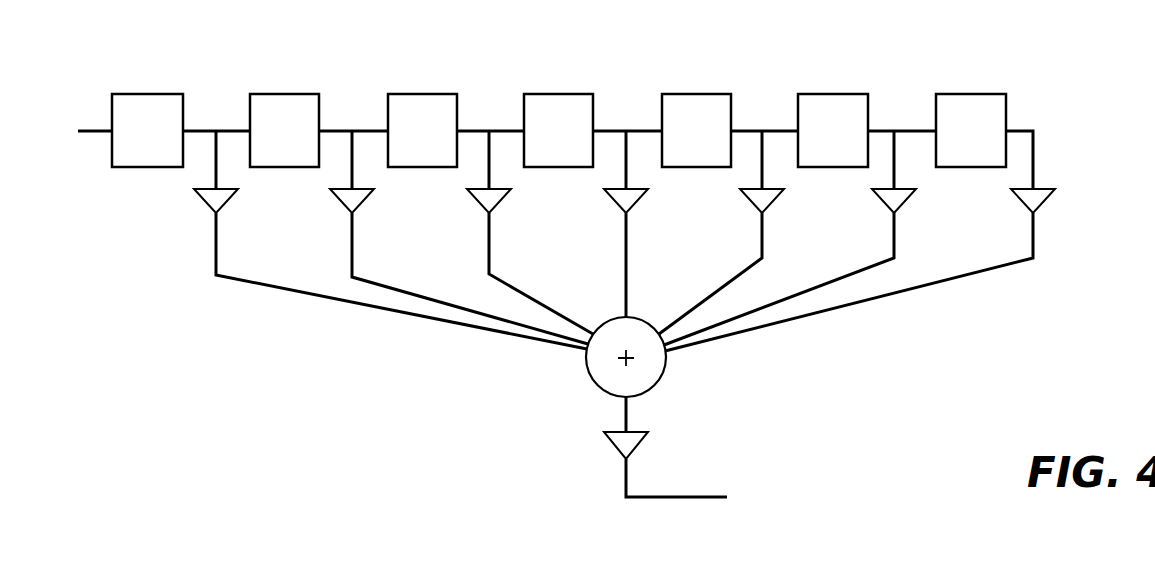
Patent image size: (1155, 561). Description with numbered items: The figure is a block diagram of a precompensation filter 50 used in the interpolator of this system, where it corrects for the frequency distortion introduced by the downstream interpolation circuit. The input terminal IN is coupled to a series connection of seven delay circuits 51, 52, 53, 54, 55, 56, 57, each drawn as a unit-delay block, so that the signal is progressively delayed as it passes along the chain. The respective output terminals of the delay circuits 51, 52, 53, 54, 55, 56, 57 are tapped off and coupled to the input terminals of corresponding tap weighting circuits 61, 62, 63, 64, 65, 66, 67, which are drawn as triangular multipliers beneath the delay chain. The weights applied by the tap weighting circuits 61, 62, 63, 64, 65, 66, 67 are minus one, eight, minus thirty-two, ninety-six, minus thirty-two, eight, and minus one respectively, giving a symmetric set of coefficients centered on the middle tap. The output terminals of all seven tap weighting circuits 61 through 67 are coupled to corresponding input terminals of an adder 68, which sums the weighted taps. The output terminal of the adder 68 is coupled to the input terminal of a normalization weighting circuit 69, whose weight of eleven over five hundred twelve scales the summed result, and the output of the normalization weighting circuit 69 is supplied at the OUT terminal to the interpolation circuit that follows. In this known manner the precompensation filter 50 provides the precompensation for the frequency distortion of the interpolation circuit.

The precompensation filter 50 is at (608, 30).
The delay circuit 51 is at (147, 94).
The delay circuit 52 is at (285, 94).
The delay circuit 53 is at (423, 94).
The delay circuit 54 is at (560, 94).
The delay circuit 55 is at (697, 94).
The delay circuit 56 is at (833, 94).
The delay circuit 57 is at (970, 94).
The tap weighting circuit 61 is at (224, 204).
The tap weighting circuit 62 is at (360, 204).
The tap weighting circuit 63 is at (497, 204).
The tap weighting circuit 64 is at (634, 204).
The tap weighting circuit 65 is at (754, 204).
The tap weighting circuit 66 is at (885, 204).
The tap weighting circuit 67 is at (1020, 204).
The adder 68 is at (589, 373).
The normalization weighting circuit 69 is at (612, 445).